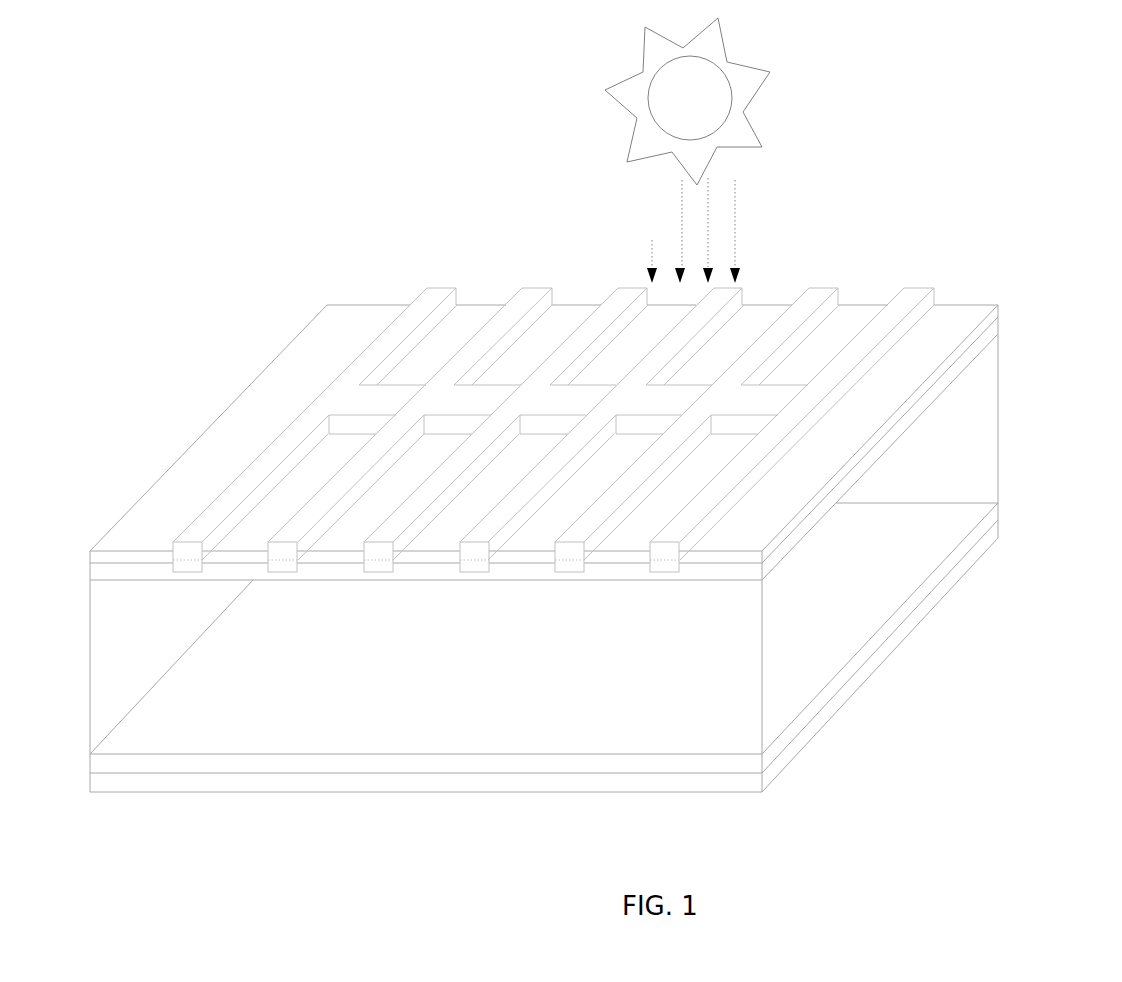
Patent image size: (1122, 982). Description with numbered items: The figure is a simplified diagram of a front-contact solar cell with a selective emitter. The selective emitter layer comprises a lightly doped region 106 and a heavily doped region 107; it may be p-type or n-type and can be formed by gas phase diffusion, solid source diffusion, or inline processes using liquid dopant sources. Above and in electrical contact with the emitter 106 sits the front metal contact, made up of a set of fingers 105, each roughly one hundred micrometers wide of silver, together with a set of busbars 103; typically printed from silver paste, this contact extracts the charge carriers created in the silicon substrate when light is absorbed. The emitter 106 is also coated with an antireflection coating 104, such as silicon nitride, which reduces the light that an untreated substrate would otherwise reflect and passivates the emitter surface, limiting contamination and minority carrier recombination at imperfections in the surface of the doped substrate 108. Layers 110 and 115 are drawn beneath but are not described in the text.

The busbars 103 is at (678, 388).
The antireflection coating 104 is at (990, 321).
The fingers 105 is at (907, 303).
The lightly doped region 106 is at (948, 383).
The heavily doped region 107 is at (940, 316).
The doped substrate 108 is at (922, 461).
The back surface field layer 110 is at (962, 550).
The back contact 115 is at (887, 653).